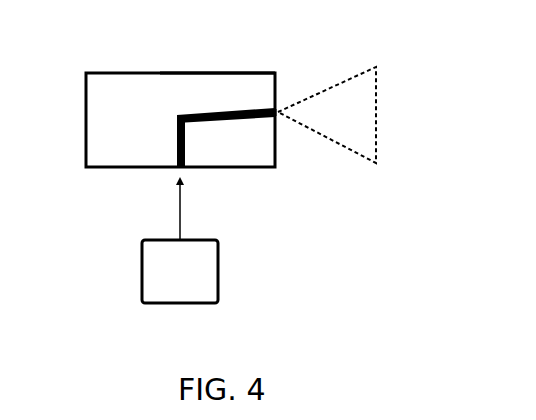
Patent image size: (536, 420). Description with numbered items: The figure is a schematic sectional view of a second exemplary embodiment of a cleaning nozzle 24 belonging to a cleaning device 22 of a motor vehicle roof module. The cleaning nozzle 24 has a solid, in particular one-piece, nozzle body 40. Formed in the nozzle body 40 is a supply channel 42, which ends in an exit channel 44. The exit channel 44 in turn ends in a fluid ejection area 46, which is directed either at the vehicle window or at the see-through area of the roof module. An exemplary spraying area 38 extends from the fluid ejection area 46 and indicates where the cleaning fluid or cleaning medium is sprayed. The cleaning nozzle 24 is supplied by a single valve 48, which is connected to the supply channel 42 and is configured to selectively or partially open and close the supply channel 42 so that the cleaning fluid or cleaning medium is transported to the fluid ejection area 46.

The cleaning device 22 is at (104, 211).
The cleaning nozzle 24 is at (105, 78).
The nozzle body 40 is at (203, 73).
The supply channel 42 is at (183, 153).
The exit channel 44 is at (243, 110).
The fluid ejection area 46 is at (280, 117).
The spraying area 38 is at (377, 80).
The valve 48 is at (220, 283).